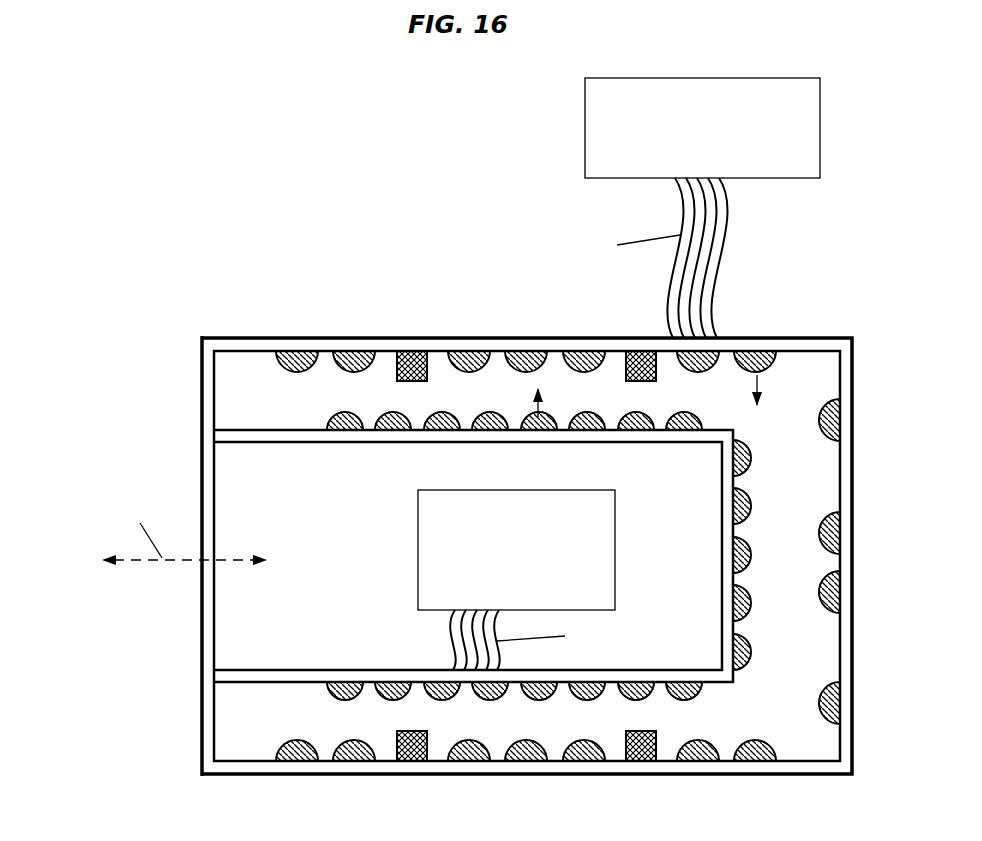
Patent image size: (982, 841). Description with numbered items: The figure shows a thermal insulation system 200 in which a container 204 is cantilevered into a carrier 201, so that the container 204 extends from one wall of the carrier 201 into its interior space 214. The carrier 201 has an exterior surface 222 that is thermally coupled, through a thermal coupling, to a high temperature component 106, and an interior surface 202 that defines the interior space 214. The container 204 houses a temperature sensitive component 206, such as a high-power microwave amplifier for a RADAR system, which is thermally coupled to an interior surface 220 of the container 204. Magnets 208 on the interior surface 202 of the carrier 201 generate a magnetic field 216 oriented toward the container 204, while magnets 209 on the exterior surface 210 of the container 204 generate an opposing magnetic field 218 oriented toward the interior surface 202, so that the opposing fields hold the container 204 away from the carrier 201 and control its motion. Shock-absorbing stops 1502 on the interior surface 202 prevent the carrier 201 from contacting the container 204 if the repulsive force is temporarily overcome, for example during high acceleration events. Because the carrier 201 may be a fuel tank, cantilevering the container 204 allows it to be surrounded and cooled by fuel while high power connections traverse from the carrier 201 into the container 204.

The high temperature component 106 is at (720, 165).
The thermal insulation system 200 is at (338, 205).
The carrier 201 is at (838, 337).
The interior surface 202 is at (807, 755).
The container 204 is at (737, 532).
The temperature sensitive component 206 is at (500, 600).
The magnets 208 is at (778, 368).
The magnets 209 is at (486, 412).
The exterior surface 210 is at (307, 427).
The interior space 214 is at (243, 380).
The magnetic field 216 is at (754, 391).
The magnetic field 218 is at (543, 398).
The interior surface 220 is at (397, 665).
The exterior surface 222 is at (200, 413).
The shock-absorbing stops 1502 is at (397, 733).